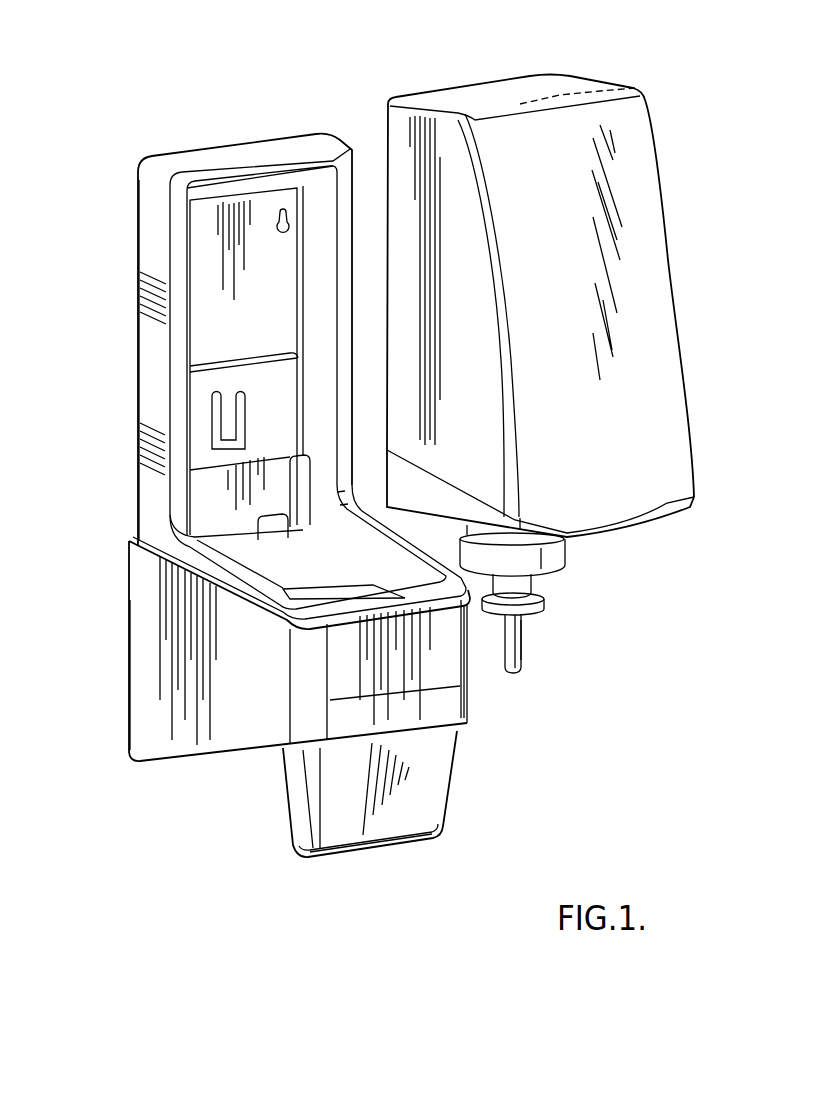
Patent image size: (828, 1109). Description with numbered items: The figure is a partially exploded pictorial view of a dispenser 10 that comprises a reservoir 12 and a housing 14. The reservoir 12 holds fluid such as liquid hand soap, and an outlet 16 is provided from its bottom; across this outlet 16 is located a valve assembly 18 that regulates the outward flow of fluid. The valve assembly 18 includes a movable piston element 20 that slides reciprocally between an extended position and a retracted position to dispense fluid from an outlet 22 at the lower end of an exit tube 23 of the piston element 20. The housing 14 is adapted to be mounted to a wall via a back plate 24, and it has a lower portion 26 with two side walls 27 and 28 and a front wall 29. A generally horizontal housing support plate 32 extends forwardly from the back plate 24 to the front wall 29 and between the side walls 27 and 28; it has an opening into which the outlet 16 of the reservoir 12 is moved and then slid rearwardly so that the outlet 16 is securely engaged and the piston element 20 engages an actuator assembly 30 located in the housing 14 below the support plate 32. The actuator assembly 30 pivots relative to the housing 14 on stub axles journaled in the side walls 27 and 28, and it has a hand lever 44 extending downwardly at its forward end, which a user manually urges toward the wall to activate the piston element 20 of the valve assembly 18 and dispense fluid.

The dispenser 10 is at (423, 0).
The reservoir 12 is at (740, 527).
The housing 14 is at (128, 462).
The outlet 16 is at (566, 538).
The valve assembly 18 is at (568, 567).
The movable piston element 20 is at (550, 609).
The outlet 22 is at (513, 674).
The exit tube 23 is at (521, 643).
The back plate 24 is at (140, 288).
The lower portion 26 is at (70, 537).
The side wall 27 is at (222, 737).
The side wall 28 is at (477, 700).
The front wall 29 is at (427, 717).
The actuator assembly 30 is at (450, 812).
The housing support plate 32 is at (337, 587).
The hand lever 44 is at (383, 833).